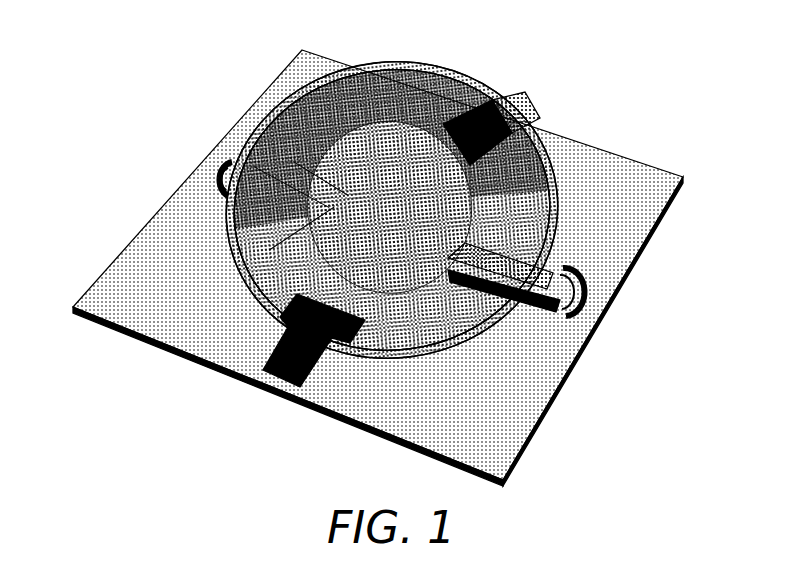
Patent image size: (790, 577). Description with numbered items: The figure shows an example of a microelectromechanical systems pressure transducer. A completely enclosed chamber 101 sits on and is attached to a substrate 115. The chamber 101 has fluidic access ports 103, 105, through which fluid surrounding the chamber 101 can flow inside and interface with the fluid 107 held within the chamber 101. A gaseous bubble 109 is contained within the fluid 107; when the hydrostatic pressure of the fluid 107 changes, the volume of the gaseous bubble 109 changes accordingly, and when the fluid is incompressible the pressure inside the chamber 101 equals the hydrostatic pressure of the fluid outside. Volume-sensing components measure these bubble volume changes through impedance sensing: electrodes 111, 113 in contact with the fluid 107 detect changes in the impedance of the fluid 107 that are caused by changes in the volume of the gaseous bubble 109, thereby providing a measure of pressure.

The chamber 101 is at (407, 210).
The fluidic access port 103 is at (580, 318).
The fluidic access port 105 is at (213, 163).
The fluid 107 is at (384, 113).
The gaseous bubble 109 is at (404, 191).
The electrode 111 is at (278, 377).
The electrode 113 is at (467, 113).
The substrate 115 is at (112, 292).